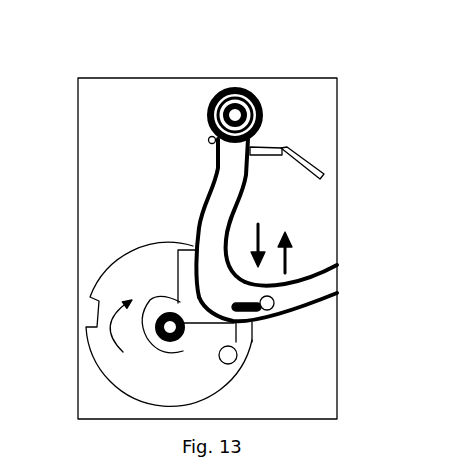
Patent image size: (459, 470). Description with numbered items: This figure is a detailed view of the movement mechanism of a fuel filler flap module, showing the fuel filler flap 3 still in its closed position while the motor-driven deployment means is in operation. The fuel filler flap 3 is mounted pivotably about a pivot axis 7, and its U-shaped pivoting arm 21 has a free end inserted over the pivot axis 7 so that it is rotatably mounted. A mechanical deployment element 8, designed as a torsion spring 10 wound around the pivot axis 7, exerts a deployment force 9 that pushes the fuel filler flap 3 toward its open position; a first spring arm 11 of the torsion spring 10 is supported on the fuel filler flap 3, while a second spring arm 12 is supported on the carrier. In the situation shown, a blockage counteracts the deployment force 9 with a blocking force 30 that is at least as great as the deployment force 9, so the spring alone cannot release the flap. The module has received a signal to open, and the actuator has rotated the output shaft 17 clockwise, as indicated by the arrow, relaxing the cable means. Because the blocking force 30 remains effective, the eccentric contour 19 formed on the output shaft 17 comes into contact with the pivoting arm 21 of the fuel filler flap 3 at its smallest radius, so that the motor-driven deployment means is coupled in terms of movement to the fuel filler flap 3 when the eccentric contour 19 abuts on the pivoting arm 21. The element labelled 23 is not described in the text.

The fuel filler flap 3 is at (313, 322).
The pivot axis 7 is at (235, 88).
The mechanical deployment element 8 is at (274, 125).
The deployment force 9 is at (288, 262).
The torsion spring 10 is at (208, 103).
The first spring arm 11 is at (208, 140).
The second spring arm 12 is at (310, 165).
The output shaft 17 is at (183, 331).
The eccentric contour 19 is at (147, 300).
The pivoting arm 21 is at (227, 183).
The cam disc 23 is at (127, 253).
The blocking force 30 is at (258, 224).